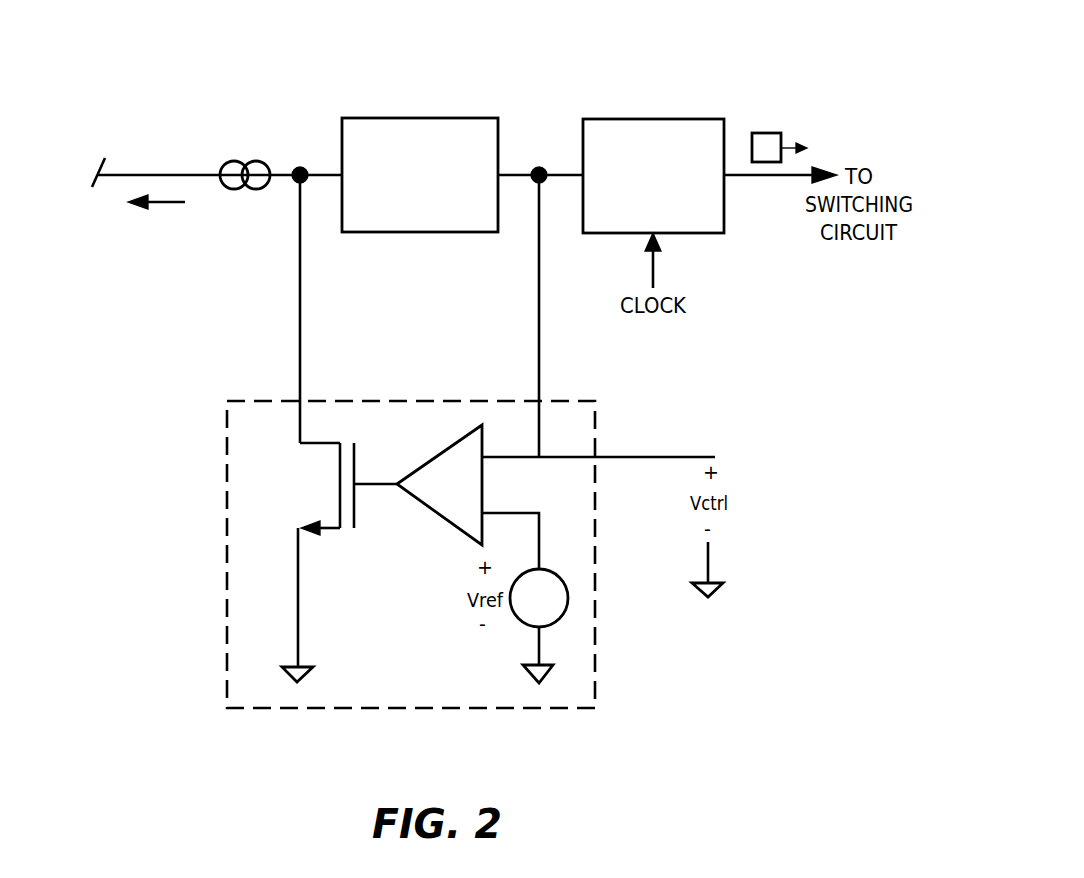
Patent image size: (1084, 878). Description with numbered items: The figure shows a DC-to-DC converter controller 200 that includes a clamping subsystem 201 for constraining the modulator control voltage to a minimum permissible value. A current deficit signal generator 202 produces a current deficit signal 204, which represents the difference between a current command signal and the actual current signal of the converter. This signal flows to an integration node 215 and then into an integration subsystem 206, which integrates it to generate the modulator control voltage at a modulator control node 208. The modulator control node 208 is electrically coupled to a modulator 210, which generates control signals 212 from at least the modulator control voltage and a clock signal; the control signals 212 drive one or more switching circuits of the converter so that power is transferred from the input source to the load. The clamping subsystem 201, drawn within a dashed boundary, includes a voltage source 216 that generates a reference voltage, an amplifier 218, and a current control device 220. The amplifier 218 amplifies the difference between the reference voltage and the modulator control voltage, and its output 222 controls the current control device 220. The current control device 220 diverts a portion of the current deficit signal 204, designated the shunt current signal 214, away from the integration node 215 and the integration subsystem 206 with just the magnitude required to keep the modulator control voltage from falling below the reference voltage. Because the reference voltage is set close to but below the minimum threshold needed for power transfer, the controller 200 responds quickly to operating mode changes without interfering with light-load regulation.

The DC-to-DC converter controller 200 is at (866, 59).
The clamping subsystem 201 is at (425, 692).
The current deficit signal generator 202 is at (252, 142).
The current deficit signal 204 is at (163, 203).
The integration subsystem 206 is at (485, 226).
The modulator control node 208 is at (539, 167).
The modulator 210 is at (710, 226).
The control signals 212 is at (767, 133).
The shunt current signal 214 is at (313, 352).
The integration node 215 is at (299, 167).
The voltage source 216 is at (568, 593).
The amplifier 218 is at (462, 490).
The current control device 220 is at (350, 545).
The output of amplifier 222 is at (378, 482).